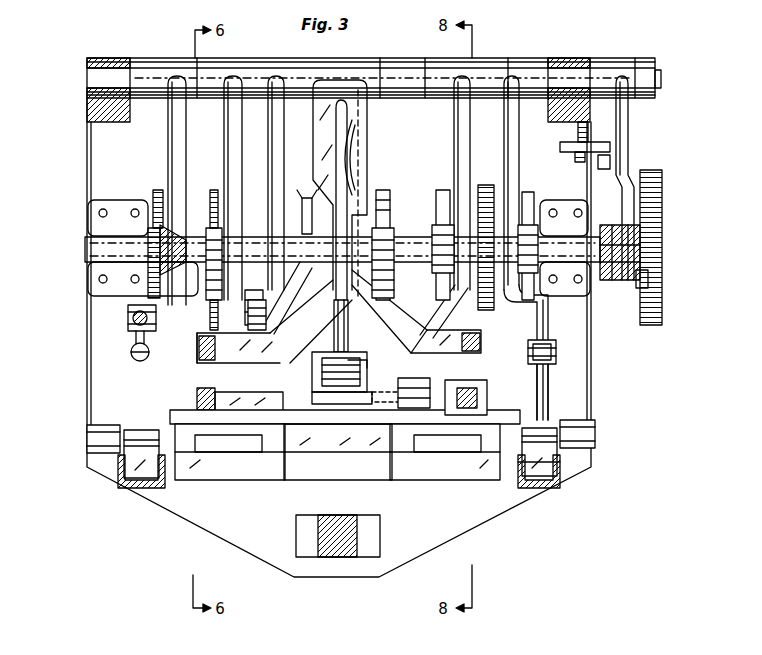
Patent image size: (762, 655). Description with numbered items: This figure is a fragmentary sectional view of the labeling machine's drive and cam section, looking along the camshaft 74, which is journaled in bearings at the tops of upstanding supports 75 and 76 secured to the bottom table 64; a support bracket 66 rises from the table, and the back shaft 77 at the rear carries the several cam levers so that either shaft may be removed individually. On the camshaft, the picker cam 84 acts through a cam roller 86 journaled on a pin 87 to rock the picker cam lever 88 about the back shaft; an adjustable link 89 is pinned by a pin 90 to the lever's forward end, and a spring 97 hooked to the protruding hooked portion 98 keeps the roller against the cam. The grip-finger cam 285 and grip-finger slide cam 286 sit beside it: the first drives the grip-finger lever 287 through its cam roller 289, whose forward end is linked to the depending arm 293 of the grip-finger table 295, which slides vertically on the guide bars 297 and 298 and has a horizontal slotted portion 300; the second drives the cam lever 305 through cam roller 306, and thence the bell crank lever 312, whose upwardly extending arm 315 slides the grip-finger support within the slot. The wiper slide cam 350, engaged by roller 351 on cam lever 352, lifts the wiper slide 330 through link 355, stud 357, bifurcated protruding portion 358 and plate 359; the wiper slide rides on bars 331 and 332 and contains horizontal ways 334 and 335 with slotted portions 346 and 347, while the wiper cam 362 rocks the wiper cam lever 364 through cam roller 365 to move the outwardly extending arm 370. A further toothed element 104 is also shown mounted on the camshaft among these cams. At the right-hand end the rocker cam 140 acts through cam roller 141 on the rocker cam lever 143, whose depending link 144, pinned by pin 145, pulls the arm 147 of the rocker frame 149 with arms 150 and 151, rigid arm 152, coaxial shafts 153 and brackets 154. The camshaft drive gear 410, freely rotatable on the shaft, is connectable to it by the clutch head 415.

The bottom table 64 is at (100, 368).
The support bracket 66 is at (350, 515).
The camshaft 74 is at (85, 250).
The upstanding support 75 is at (118, 218).
The upstanding support 76 is at (564, 218).
The back shaft 77 is at (661, 78).
The picker cam 84 is at (158, 190).
The cam roller 86 is at (152, 225).
The pin 87 is at (150, 264).
The picker cam lever 88 is at (168, 136).
The adjustable link 89 is at (158, 318).
The pin 90 is at (128, 318).
The spring 97 is at (149, 348).
The hooked portion 98 is at (133, 344).
The gear 104 is at (486, 190).
The rocker cam 140 is at (527, 195).
The cam roller 141 is at (505, 312).
The rocker cam lever 143 is at (512, 118).
The depending link 144 is at (540, 335).
The pin 145 is at (545, 358).
The arm 147 is at (542, 386).
The rocker frame 149 is at (568, 462).
The arm 150 is at (548, 488).
The arm 151 is at (118, 476).
The rigid arm 152 is at (320, 470).
The coaxial shafts 153 is at (82, 428).
The upstanding brackets 154 is at (90, 452).
The grip-finger cam 285 is at (212, 195).
The grip-finger slide cam 286 is at (250, 200).
The grip-finger lever 287 is at (228, 127).
The cam roller 289 is at (200, 220).
The depending arm 293 is at (248, 318).
The grip-finger table 295 is at (238, 348).
The guide bar 297 is at (196, 352).
The guide bar 298 is at (478, 346).
The slotted portion 300 is at (337, 117).
The cam lever 305 is at (276, 74).
The cam roller 306 is at (245, 296).
The bell crank lever 312 is at (296, 268).
The upwardly extending arm 315 is at (304, 200).
The wiper slide 330 is at (258, 396).
The bar 331 is at (197, 396).
The bar 332 is at (445, 392).
The horizontal way 334 is at (198, 460).
The horizontal way 335 is at (482, 460).
The slotted portion 346 is at (262, 442).
The slotted portion 347 is at (414, 442).
The wiper slide cam 350 is at (382, 195).
The roller 351 is at (385, 240).
The cam lever 352 is at (360, 135).
The link 355 is at (351, 353).
The stud 357 is at (364, 362).
The bifurcated protruding portion 358 is at (319, 383).
The plate 359 is at (361, 397).
The wiper cam 362 is at (445, 300).
The wiper cam lever 364 is at (454, 155).
The cam roller 365 is at (438, 273).
The outwardly extending arm 370 is at (394, 387).
The camshaft drive gear 410 is at (662, 242).
The clutch head 415 is at (600, 215).